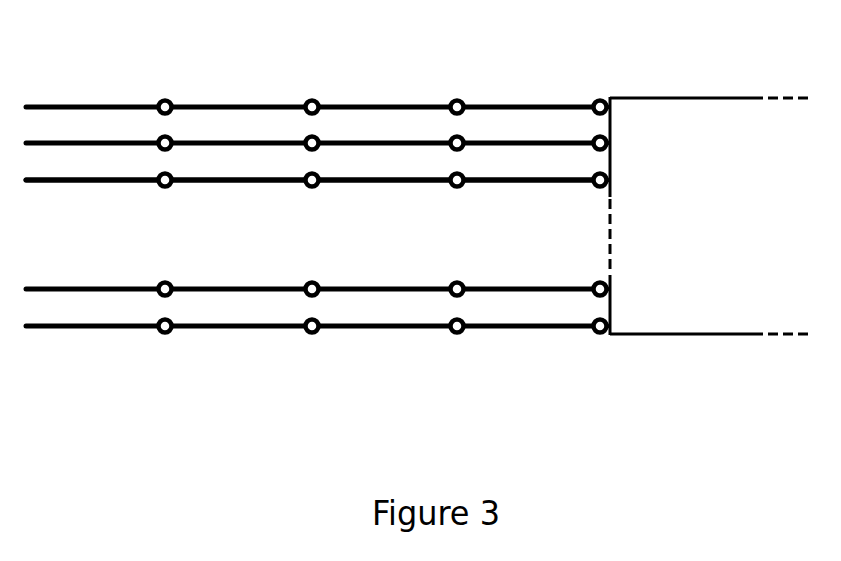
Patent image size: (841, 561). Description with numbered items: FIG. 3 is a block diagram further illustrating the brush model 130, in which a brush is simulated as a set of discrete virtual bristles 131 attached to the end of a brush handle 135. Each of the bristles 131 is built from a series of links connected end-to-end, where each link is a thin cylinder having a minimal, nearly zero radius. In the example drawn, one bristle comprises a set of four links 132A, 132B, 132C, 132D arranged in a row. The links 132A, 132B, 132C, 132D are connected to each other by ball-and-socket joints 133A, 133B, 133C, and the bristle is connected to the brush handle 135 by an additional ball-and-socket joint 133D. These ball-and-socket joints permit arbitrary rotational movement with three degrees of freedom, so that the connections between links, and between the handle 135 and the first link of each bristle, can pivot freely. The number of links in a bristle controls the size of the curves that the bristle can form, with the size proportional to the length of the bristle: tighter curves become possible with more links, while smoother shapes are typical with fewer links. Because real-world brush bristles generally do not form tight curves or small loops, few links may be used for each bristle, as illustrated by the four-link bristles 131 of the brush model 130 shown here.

The brush model 130 is at (292, 390).
The bristles 131 is at (248, 64).
The link 132A is at (78, 183).
The link 132B is at (225, 183).
The link 132C is at (370, 183).
The link 132D is at (515, 183).
The ball-and-socket joint 133A is at (159, 186).
The ball-and-socket joint 133B is at (306, 186).
The ball-and-socket joint 133C is at (451, 186).
The ball-and-socket joint 133D is at (596, 186).
The brush handle 135 is at (722, 96).